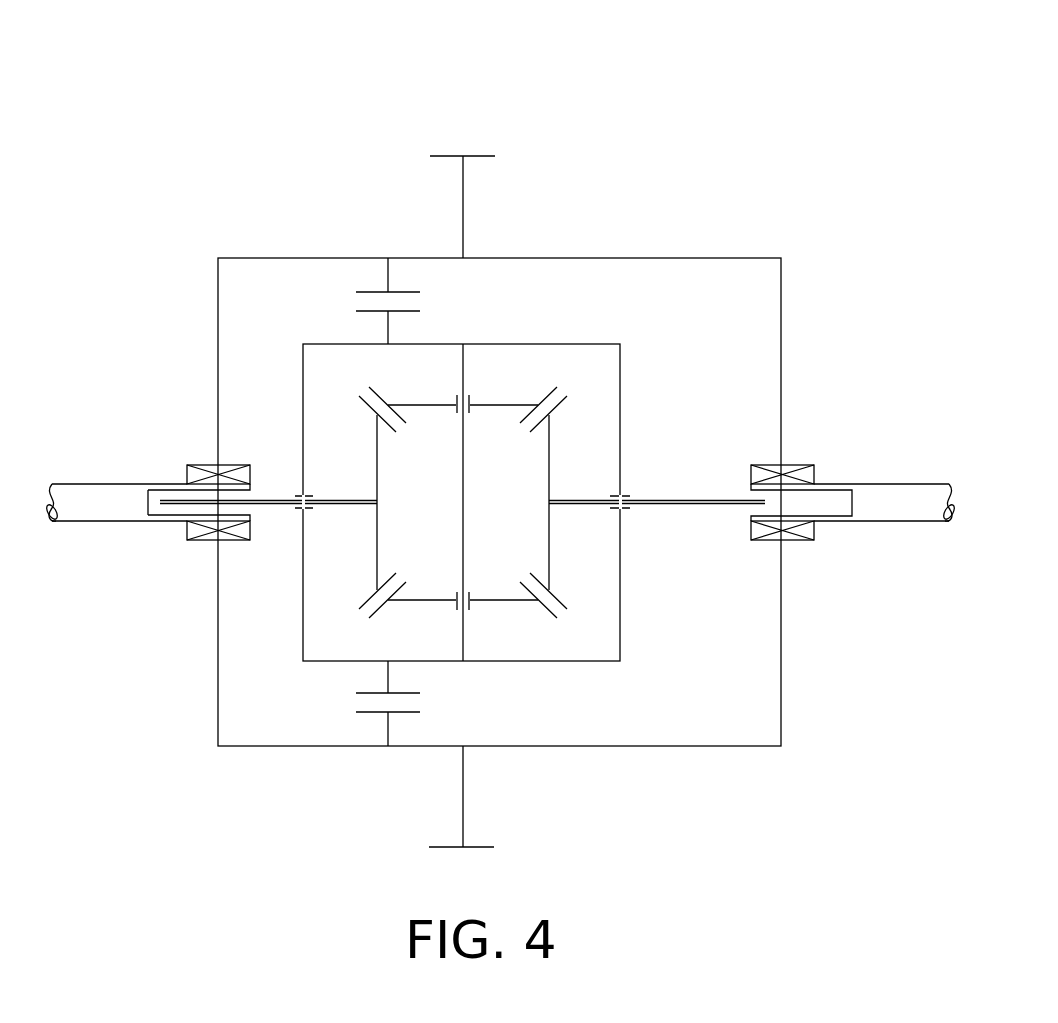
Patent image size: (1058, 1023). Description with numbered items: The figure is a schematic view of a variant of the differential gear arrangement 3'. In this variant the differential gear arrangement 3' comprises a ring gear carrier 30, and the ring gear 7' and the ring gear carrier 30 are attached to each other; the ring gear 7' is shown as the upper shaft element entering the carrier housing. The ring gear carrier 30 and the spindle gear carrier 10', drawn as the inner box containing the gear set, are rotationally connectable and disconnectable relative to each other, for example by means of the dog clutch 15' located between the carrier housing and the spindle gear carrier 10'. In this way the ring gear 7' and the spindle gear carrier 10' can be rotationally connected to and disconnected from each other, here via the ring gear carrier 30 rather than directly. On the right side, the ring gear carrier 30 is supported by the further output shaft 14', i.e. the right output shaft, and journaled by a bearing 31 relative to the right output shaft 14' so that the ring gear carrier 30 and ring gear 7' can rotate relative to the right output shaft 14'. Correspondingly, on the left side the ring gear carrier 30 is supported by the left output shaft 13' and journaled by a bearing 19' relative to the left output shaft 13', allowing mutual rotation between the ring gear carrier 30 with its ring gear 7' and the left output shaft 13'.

The differential gear arrangement 3' is at (292, 63).
The ring gear 7' is at (422, 203).
The spindle gear carrier 10' is at (462, 413).
The ring gear carrier 30 is at (735, 258).
The left output shaft 13' is at (146, 464).
The right output shaft 14' is at (856, 464).
The bearing 19' is at (183, 461).
The bearing 31 is at (810, 532).
The dog clutch 15' is at (321, 741).